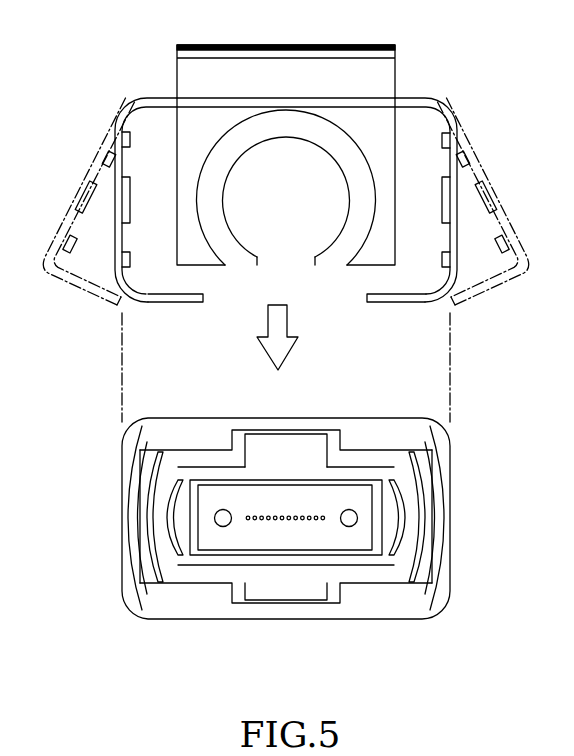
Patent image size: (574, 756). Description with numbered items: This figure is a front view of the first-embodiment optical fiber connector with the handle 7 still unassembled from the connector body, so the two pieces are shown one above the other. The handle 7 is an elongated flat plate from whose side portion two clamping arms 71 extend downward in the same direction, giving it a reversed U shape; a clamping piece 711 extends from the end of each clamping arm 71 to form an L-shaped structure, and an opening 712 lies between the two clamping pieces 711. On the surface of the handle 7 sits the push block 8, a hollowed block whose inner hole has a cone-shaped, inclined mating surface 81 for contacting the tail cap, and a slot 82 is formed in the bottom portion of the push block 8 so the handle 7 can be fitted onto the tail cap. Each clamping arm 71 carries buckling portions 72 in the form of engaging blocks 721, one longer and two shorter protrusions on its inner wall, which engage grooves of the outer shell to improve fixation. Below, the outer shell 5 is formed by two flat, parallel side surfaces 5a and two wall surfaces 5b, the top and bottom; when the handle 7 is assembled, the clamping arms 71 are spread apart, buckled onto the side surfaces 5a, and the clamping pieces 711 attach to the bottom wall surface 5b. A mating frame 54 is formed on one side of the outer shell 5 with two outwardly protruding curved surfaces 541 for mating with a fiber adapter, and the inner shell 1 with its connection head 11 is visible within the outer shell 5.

The handle 7 is at (378, 75).
The push block 8 is at (188, 183).
The mating surface 81 is at (217, 163).
The slot 82 is at (317, 256).
The clamping arms 71 is at (502, 203).
The clamping piece 711 is at (475, 295).
The opening 712 is at (203, 300).
The buckling portions 72 is at (486, 57).
The engaging block 721 is at (445, 190).
The outer shell 5 is at (450, 563).
The side surfaces 5a is at (122, 462).
The wall surfaces 5b is at (283, 620).
The curved surfaces 541 is at (118, 515).
The mating frame 54 is at (377, 595).
The inner shell 1 is at (232, 562).
The connection head 11 is at (373, 512).